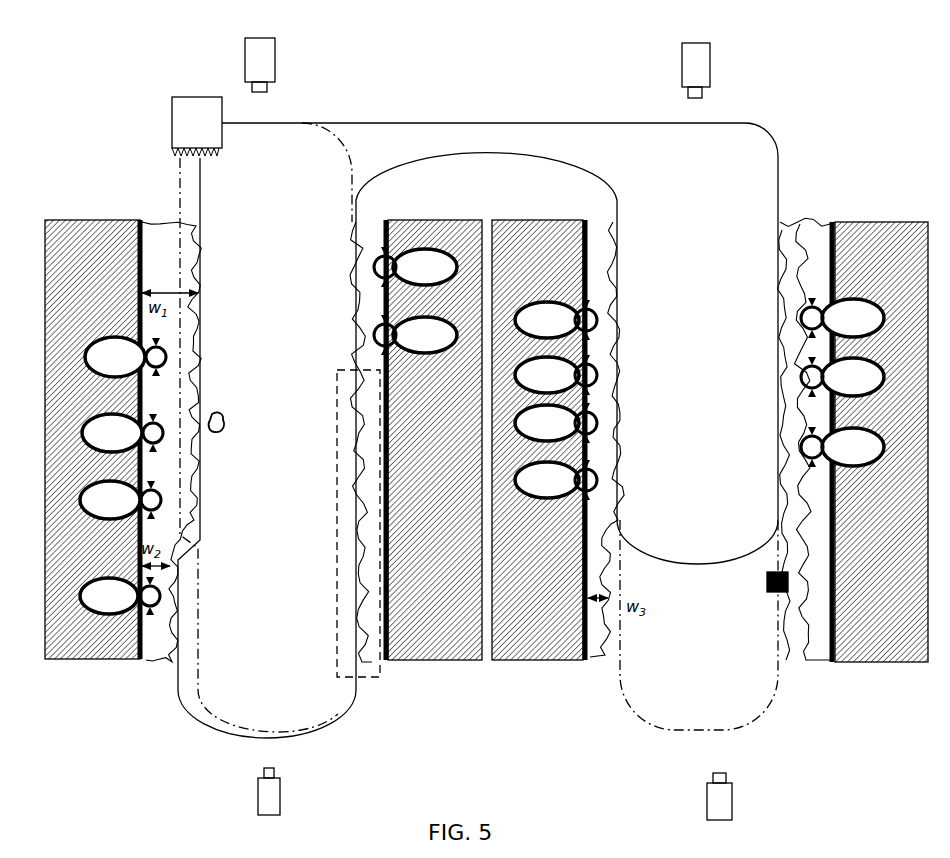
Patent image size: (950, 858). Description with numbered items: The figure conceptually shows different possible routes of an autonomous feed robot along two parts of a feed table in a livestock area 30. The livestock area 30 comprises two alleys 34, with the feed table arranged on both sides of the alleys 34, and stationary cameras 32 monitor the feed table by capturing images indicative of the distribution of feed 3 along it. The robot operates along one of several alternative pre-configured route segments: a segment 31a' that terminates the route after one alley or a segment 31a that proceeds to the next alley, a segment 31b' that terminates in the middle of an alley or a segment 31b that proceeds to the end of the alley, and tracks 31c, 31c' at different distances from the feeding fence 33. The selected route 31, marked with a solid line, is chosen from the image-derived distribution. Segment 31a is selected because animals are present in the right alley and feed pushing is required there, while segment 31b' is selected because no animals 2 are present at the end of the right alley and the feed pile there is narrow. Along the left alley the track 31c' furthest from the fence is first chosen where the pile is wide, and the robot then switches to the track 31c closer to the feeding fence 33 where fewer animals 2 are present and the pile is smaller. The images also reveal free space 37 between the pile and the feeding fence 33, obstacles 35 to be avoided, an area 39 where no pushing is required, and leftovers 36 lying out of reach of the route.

The animals 2 is at (84, 578).
The feed 3 is at (786, 266).
The livestock area 30 is at (58, 176).
The route 31 is at (207, 232).
The route segment proceeding to the next alley 31a is at (487, 407).
The route segment terminating after one alley 31a' is at (302, 172).
The route segment proceeding to the end of the alley 31b is at (745, 640).
The route segment terminating in the middle of an alley 31b' is at (697, 393).
The track closer to the feeding fence 31c is at (213, 481).
The track furthest from the feeding fence 31c' is at (259, 445).
The cameras 32 is at (240, 66).
The feeding fence 33 is at (138, 283).
The alleys 34 is at (297, 364).
The obstacles 35 is at (764, 584).
The leftovers 36 is at (228, 420).
The free space 37 is at (816, 414).
The area 39 is at (345, 540).